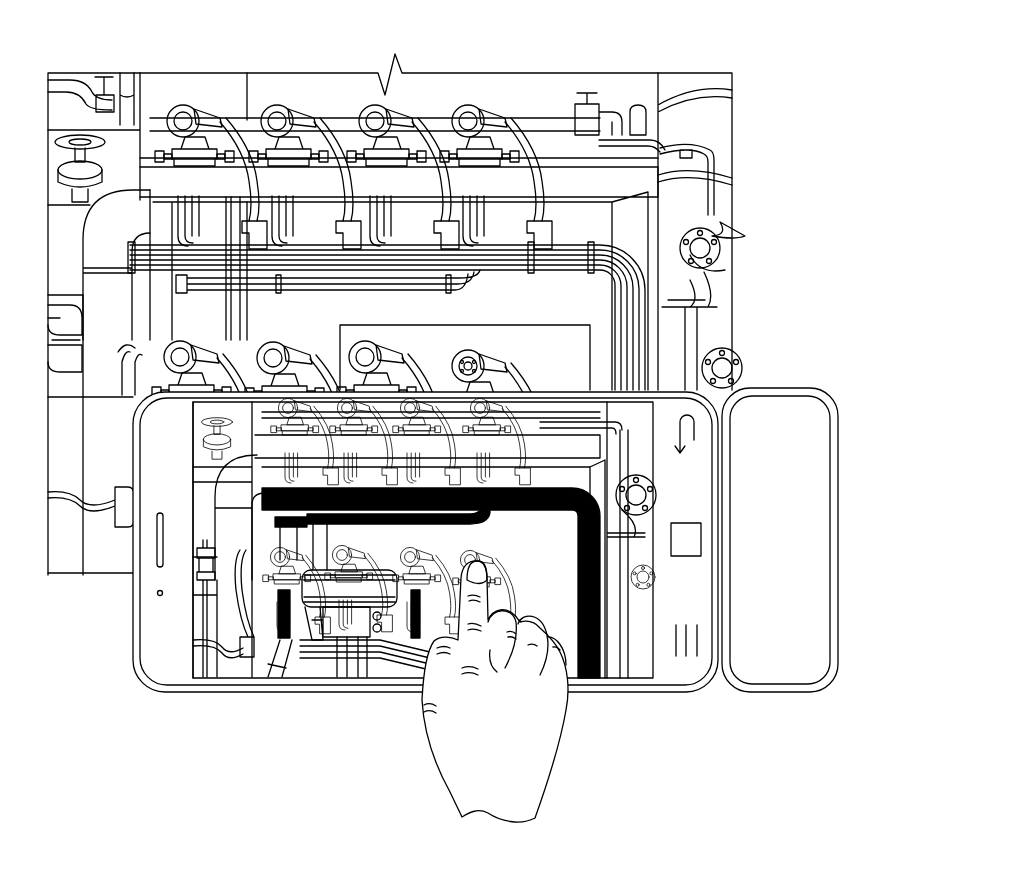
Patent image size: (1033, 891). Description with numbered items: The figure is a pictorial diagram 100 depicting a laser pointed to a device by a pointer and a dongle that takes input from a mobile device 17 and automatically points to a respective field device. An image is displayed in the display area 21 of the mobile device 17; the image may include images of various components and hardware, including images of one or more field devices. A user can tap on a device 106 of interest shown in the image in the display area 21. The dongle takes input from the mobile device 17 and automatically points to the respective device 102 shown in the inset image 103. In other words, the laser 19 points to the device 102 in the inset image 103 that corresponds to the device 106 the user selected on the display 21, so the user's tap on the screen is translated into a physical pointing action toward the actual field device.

The pictorial diagram 100 is at (703, 39).
The inset image 103 is at (483, 92).
The device 102 is at (474, 340).
The mobile device 17 is at (122, 687).
The display area 21 is at (192, 552).
The laser 19 is at (813, 465).
The device of interest 106 is at (483, 556).